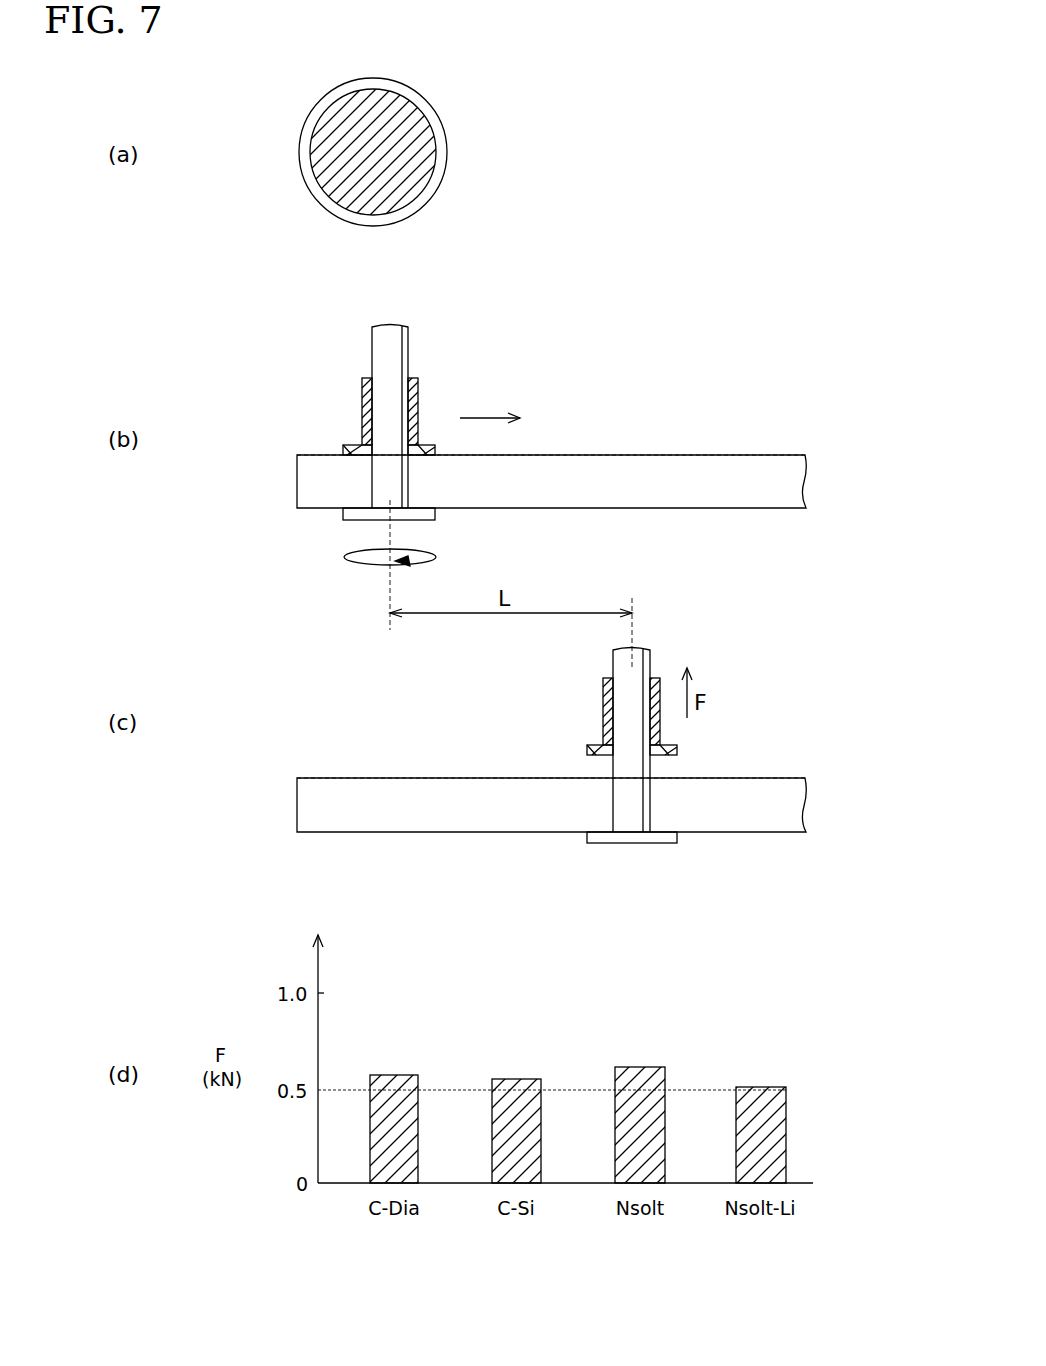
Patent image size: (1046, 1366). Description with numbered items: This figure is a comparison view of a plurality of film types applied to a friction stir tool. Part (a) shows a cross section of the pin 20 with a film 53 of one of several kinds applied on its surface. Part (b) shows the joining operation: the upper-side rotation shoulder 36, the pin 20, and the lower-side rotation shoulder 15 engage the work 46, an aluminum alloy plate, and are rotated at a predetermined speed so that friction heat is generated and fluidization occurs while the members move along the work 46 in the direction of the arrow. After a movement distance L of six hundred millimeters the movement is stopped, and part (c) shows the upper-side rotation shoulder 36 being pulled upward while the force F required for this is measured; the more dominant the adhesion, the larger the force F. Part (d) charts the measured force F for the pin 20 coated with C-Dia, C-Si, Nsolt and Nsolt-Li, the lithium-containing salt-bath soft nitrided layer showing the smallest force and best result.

The pin 20 is at (325, 146).
The film 53 is at (447, 148).
The upper-side rotation shoulder 36 is at (343, 452).
The work 46 is at (602, 465).
The lower-side rotation shoulder 15 is at (343, 515).